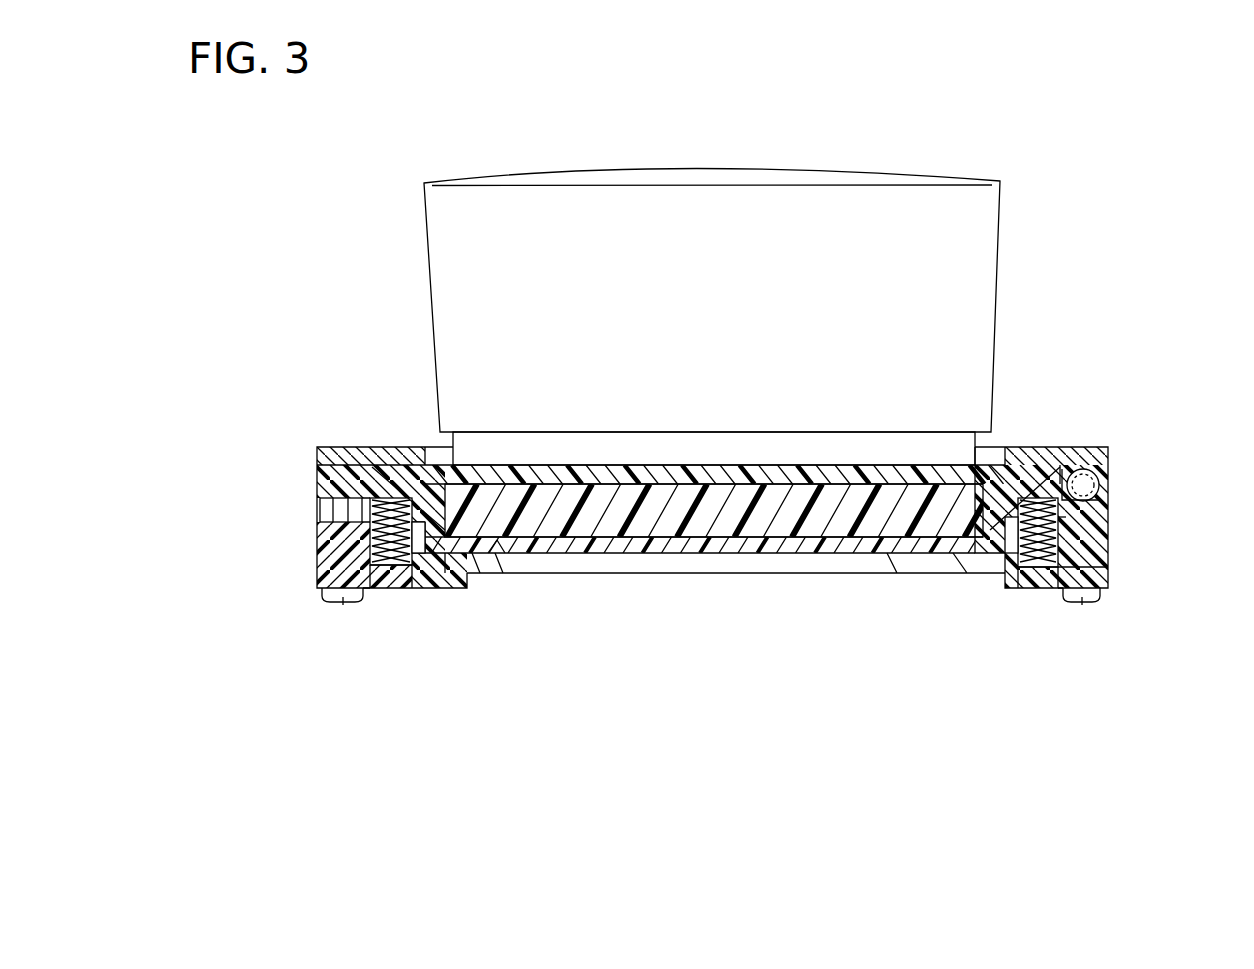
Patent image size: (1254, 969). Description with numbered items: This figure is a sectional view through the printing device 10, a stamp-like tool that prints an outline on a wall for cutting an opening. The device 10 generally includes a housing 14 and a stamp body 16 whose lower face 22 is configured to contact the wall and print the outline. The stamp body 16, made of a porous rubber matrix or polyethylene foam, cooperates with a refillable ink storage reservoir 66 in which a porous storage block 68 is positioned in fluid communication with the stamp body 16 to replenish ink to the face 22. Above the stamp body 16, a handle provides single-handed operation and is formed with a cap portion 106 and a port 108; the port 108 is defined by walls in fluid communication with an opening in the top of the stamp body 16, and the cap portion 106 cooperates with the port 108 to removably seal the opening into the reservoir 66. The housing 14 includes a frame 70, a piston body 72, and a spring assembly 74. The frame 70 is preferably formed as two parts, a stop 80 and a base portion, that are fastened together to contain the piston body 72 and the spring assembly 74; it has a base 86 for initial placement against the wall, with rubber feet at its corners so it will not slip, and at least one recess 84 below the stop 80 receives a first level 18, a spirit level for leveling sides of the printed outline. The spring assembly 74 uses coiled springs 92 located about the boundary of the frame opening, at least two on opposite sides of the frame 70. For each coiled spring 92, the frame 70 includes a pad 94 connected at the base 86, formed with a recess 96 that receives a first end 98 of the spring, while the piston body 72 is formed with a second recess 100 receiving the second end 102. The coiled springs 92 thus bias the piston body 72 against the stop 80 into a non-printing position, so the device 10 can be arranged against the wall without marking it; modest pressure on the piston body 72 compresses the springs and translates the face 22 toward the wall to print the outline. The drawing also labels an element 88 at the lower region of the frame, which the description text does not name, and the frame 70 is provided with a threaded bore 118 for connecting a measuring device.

The printing device 10 is at (302, 205).
The housing 14 is at (322, 546).
The stamp body 16 is at (478, 568).
The first level 18 is at (1104, 490).
The face 22 is at (935, 576).
The refillable ink storage reservoir 66 is at (884, 505).
The storage block 68 is at (508, 548).
The frame 70 is at (1112, 565).
The piston body 72 is at (455, 592).
The spring assembly 74 is at (380, 592).
The stop 80 is at (1106, 452).
The recess 84 is at (1104, 478).
The base 86 is at (375, 590).
The base wall 88 is at (350, 602).
The coiled spring 92 is at (360, 560).
The pad 94 is at (425, 590).
The recess 96 is at (345, 600).
The first end 98 is at (408, 592).
The second recess 100 is at (396, 505).
The second end 102 is at (410, 503).
The cap portion 106 is at (1003, 292).
The port 108 is at (1003, 183).
The threaded bore 118 is at (320, 508).